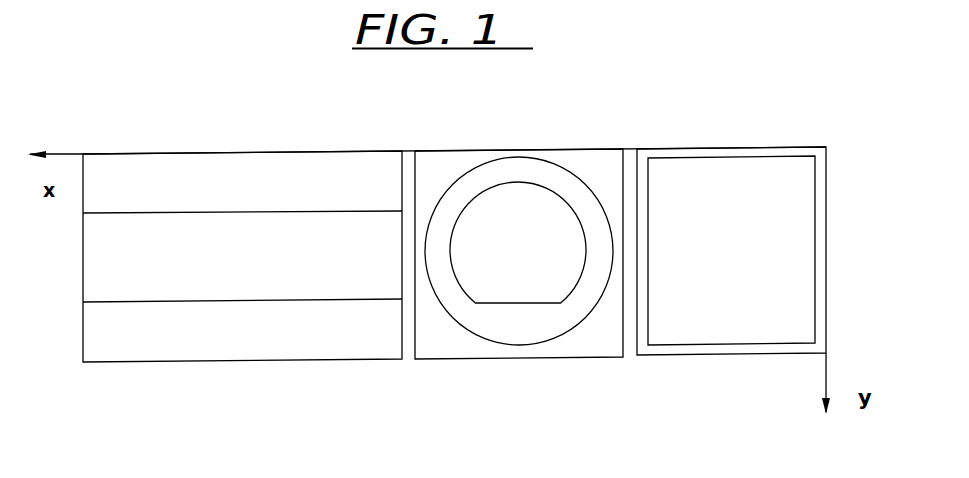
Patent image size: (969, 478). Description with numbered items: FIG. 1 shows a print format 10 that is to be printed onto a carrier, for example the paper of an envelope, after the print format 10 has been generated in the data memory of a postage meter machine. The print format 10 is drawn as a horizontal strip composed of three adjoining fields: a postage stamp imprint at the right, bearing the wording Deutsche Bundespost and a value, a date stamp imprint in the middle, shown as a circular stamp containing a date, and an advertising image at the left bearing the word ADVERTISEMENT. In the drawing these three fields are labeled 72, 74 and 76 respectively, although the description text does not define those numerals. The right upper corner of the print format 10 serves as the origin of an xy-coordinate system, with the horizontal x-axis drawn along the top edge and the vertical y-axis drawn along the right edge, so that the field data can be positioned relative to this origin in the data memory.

The print format 10 is at (648, 105).
The postage value field 72 is at (687, 357).
The date stamp field 74 is at (480, 359).
The advertisement field 76 is at (258, 363).